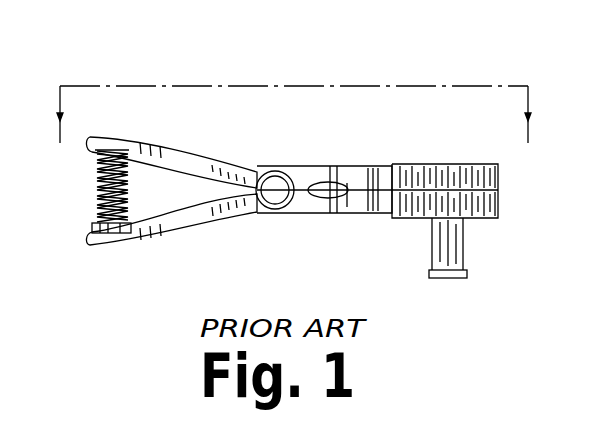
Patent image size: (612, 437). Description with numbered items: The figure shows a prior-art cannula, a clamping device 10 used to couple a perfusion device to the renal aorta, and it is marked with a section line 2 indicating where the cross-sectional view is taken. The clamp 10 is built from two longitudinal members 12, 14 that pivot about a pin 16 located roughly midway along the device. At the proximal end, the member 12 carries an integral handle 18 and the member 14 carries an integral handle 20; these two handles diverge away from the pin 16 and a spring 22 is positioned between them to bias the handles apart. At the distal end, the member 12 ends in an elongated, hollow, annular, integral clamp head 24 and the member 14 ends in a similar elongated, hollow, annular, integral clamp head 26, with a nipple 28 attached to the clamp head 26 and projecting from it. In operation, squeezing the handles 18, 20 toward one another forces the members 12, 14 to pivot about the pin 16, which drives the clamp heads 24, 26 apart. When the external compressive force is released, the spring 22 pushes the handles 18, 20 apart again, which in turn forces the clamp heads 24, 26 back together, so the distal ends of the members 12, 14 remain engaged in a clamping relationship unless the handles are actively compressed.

The section line 2- 2 is at (294, 115).
The clamping device 10 is at (252, 60).
The longitudinal member 12 is at (340, 166).
The longitudinal member 14 is at (342, 213).
The pin 16 is at (268, 211).
The handle 18 is at (112, 139).
The handle 20 is at (112, 246).
The spring 22 is at (98, 189).
The clamp head 24 is at (502, 178).
The clamp head 26 is at (502, 200).
The nipple 28 is at (465, 250).